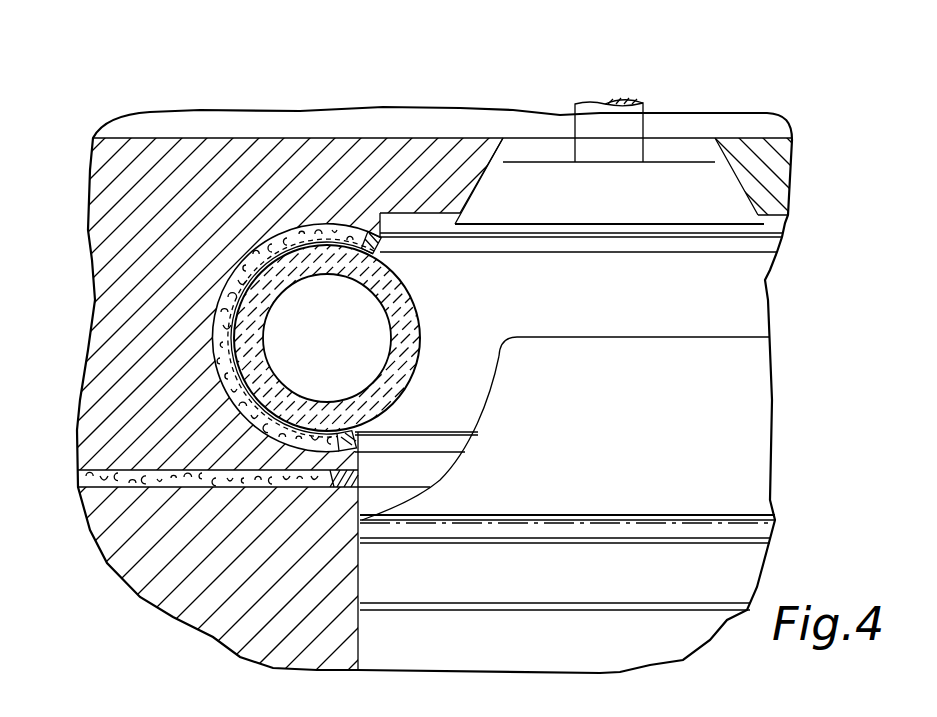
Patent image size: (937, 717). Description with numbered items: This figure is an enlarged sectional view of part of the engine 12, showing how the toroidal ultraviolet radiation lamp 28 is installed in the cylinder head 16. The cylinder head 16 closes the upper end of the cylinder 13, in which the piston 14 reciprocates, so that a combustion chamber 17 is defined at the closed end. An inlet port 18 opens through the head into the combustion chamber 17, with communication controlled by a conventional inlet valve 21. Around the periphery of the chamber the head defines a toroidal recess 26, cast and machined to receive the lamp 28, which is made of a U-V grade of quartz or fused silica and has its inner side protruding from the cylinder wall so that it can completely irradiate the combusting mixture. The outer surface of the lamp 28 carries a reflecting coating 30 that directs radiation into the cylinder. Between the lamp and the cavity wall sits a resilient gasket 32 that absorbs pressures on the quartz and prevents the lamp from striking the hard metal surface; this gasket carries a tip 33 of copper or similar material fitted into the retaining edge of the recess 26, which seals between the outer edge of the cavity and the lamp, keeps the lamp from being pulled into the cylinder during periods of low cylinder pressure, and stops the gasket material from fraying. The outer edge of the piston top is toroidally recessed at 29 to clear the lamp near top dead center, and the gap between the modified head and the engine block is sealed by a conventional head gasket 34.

The engine 12 is at (150, 113).
The cylinder 13 is at (365, 640).
The piston 14 is at (615, 350).
The cylinder head 16 is at (340, 167).
The combustion chamber 17 is at (745, 294).
The inlet port 18 is at (500, 152).
The inlet valve 21 is at (663, 180).
The toroidal recess 26 is at (225, 332).
The ultraviolet radiation lamp 28 is at (421, 349).
The toroidal recess of piston top 29 is at (498, 384).
The reflecting coating 30 is at (238, 386).
The resilient gasket 32 is at (265, 250).
The tip 33 is at (378, 242).
The head gasket 34 is at (80, 474).